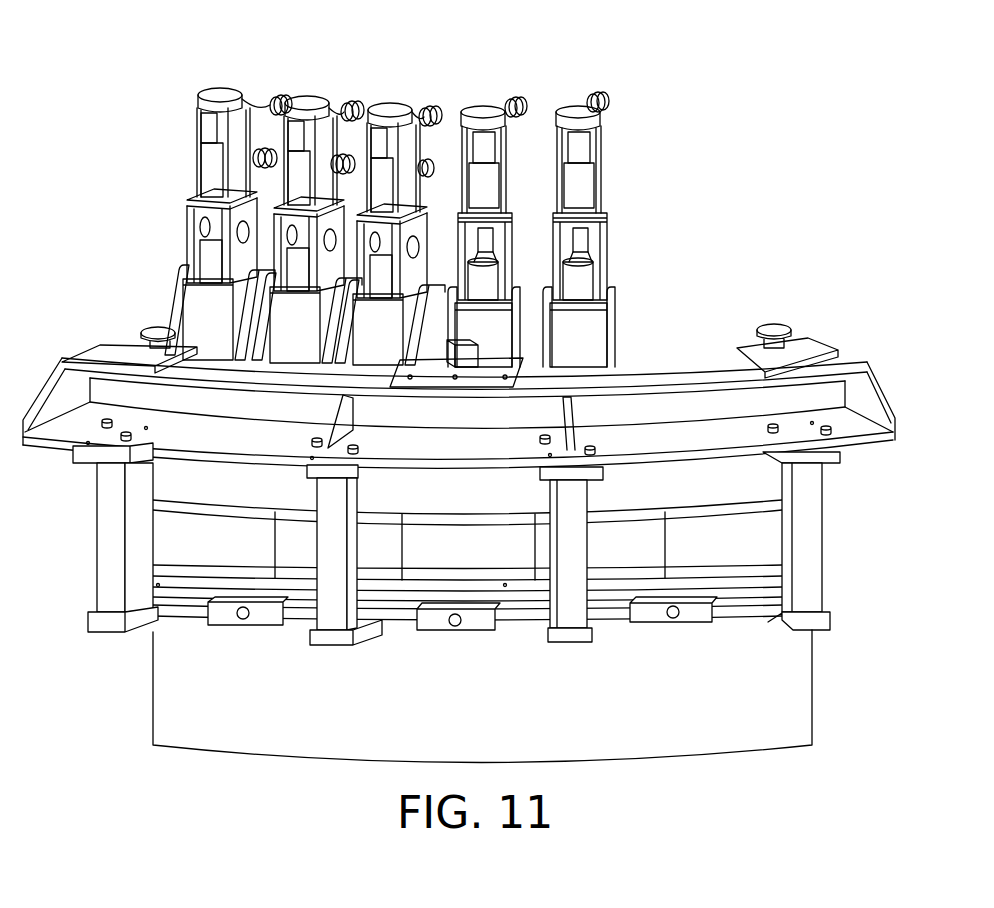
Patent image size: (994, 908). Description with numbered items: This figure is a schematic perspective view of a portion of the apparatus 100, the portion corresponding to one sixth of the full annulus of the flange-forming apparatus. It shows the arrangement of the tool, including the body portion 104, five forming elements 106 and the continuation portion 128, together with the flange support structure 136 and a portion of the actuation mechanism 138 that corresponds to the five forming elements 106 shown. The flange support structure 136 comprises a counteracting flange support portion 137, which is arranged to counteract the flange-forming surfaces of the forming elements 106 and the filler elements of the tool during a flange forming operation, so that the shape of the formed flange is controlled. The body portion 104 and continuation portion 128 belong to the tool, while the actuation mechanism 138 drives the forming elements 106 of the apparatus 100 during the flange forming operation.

The apparatus 100 is at (791, 186).
The body portion 104 is at (808, 700).
The forming elements 106 is at (167, 530).
The continuation portion 128 is at (167, 475).
The flange support structure 136 is at (874, 497).
The counteracting flange support portion 137 is at (152, 575).
The actuation mechanism 138 is at (607, 76).